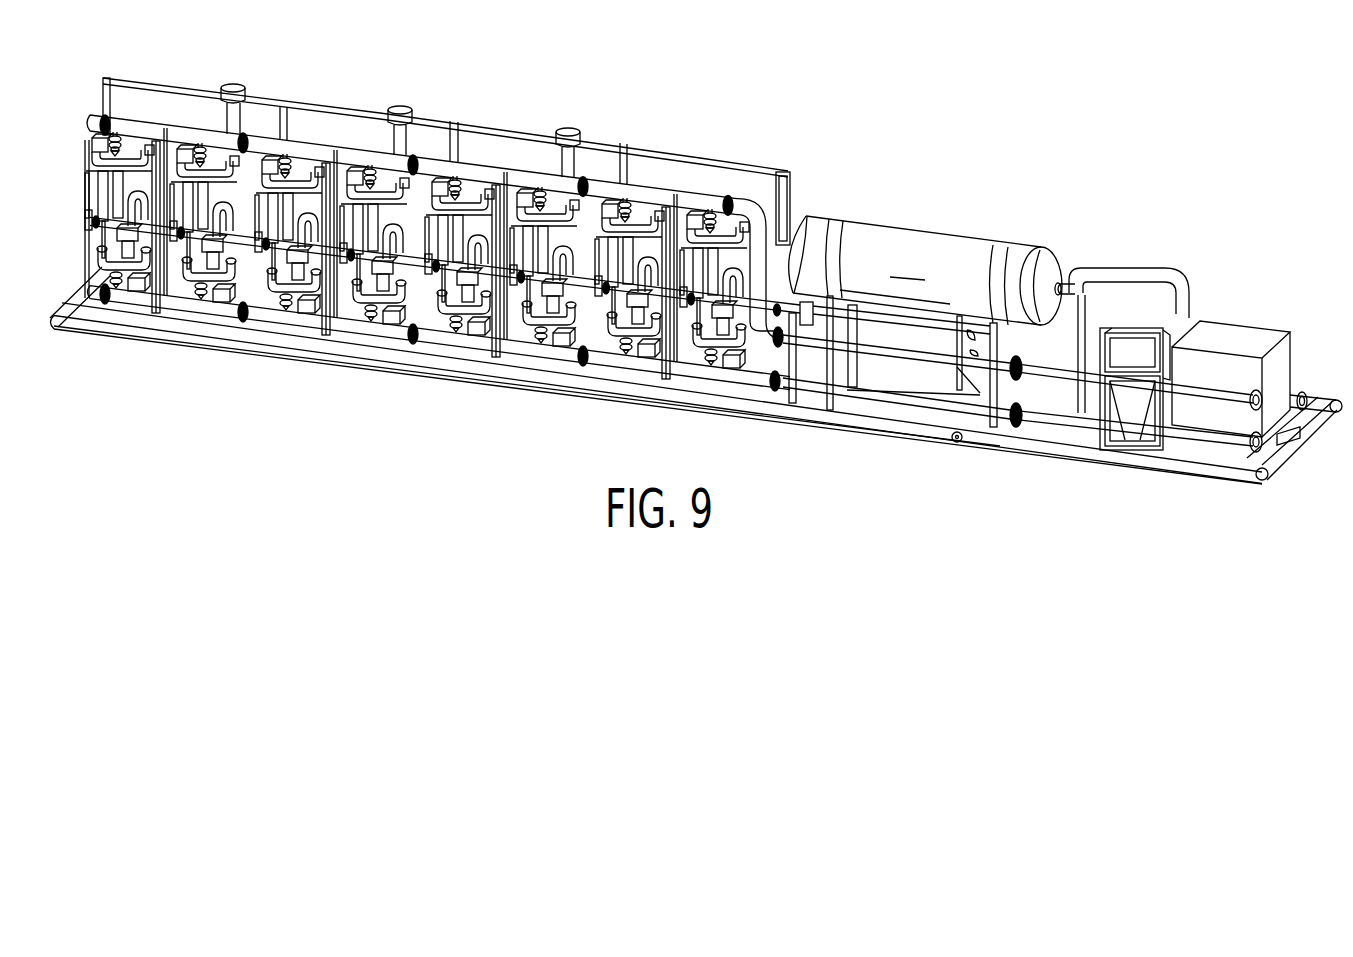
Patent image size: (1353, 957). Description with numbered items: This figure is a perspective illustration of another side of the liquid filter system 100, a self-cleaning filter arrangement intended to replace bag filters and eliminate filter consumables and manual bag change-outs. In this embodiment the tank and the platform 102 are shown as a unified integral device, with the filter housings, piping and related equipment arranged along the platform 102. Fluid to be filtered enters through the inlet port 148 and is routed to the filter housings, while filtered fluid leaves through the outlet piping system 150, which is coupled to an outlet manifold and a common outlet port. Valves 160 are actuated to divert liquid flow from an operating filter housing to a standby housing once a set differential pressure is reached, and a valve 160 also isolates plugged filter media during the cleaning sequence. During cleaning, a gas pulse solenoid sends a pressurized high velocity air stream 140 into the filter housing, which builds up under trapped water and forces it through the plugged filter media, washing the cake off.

The liquid filter system 100 is at (800, 93).
The platform 102 is at (1035, 430).
The air stream 140 is at (930, 243).
The inlet port 148 is at (1208, 390).
The outlet piping system 150 is at (1207, 438).
The valves 160 is at (368, 320).